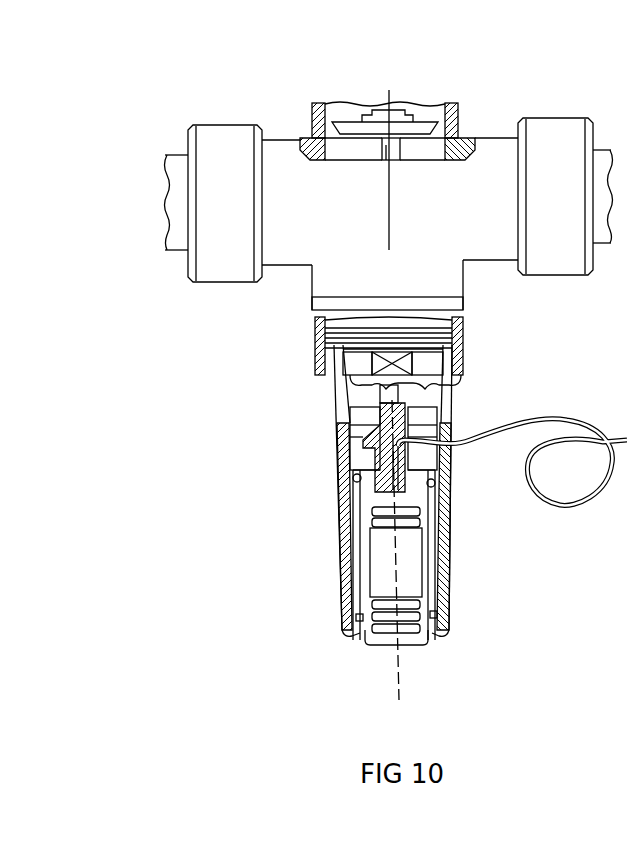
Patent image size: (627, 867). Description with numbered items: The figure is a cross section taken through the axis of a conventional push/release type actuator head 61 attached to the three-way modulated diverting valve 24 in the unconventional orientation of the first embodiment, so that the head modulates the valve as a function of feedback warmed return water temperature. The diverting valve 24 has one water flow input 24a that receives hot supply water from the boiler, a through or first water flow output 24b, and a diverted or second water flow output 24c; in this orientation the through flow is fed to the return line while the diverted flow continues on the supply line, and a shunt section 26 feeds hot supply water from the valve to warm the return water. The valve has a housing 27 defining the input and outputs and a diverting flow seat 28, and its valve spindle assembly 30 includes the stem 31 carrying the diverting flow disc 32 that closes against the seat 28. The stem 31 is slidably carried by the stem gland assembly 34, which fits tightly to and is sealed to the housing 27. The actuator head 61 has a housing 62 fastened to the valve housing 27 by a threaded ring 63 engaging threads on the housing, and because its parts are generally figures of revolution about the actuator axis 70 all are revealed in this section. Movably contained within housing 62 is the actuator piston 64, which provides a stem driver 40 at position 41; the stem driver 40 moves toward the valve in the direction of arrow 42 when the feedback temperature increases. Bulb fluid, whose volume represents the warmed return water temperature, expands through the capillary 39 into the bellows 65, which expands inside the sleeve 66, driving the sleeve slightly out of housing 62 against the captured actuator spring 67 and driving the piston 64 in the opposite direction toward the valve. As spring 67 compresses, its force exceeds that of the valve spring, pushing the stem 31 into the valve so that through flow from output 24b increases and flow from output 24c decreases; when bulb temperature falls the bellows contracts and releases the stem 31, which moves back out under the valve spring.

The three-way modulated diverting valve 24 is at (401, 222).
The water flow input 24a is at (553, 283).
The first water flow output 24b is at (219, 120).
The second water flow output 24c is at (472, 82).
The shunt section 26 is at (175, 155).
The housing 27 is at (463, 140).
The diverting flow seat 28 is at (428, 150).
The valve spindle assembly 30 is at (427, 491).
The stem 31 is at (380, 152).
The diverting flow disc 32 is at (428, 120).
The stem gland assembly 34 is at (465, 310).
The capillary 39 is at (563, 505).
The stem driver 40 is at (440, 393).
The position 41 is at (463, 402).
The arrow 42 is at (458, 403).
The push/release type actuator head 61 is at (428, 640).
The housing 62 is at (450, 590).
The threaded ring 63 is at (315, 352).
The actuator piston 64 is at (340, 442).
The bellows 65 is at (412, 557).
The sleeve 66 is at (430, 572).
The actuator spring 67 is at (355, 490).
The actuator axis 70 is at (391, 246).